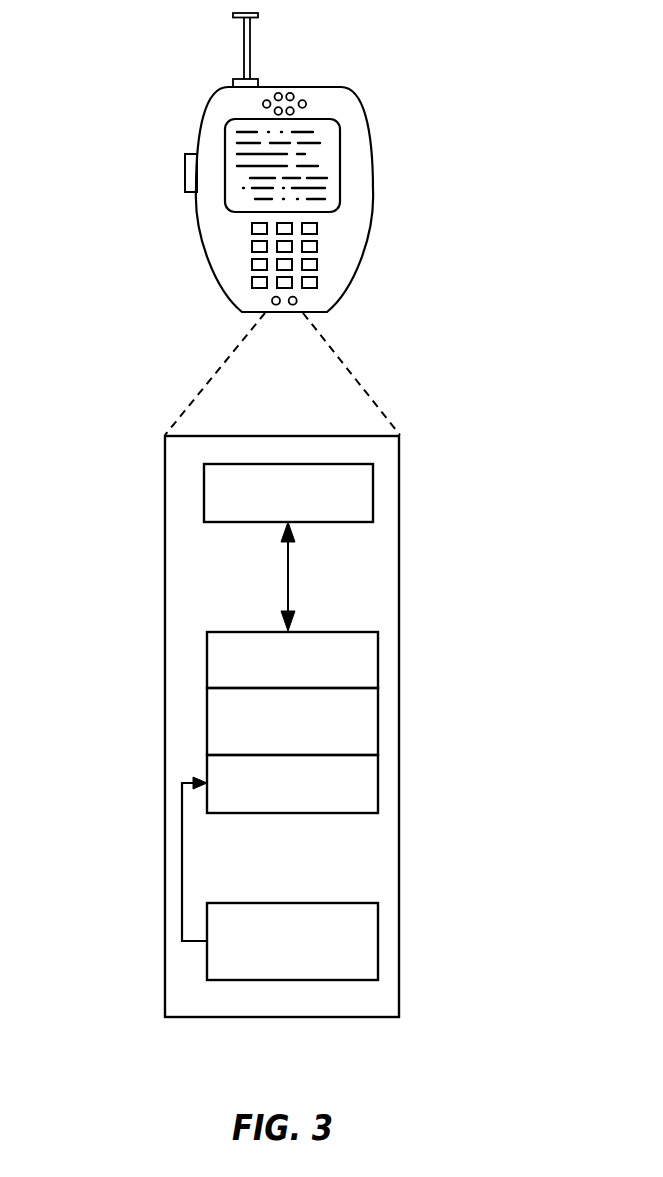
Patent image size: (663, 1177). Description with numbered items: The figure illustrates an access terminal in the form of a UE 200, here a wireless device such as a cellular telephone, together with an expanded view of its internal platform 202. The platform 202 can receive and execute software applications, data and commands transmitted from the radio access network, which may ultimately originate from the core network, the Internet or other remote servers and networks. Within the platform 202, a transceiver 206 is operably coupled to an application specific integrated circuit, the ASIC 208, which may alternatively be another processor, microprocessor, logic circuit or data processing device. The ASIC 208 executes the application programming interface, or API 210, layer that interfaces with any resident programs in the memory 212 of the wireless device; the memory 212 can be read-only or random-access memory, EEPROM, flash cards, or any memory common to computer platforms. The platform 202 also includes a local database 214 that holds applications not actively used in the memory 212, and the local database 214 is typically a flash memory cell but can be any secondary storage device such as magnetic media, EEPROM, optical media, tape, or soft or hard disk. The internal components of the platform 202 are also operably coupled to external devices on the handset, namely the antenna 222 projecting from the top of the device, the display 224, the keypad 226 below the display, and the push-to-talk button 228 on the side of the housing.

The UE 200 is at (350, 290).
The platform 202 is at (165, 632).
The transceiver 206 is at (373, 493).
The application specific integrated circuit 208 is at (378, 667).
The application programming interface 210 is at (378, 716).
The memory 212 is at (378, 783).
The local database 214 is at (378, 923).
The antenna 222 is at (252, 28).
The display 224 is at (341, 153).
The keypad 226 is at (317, 246).
The push-to-talk button 228 is at (185, 165).